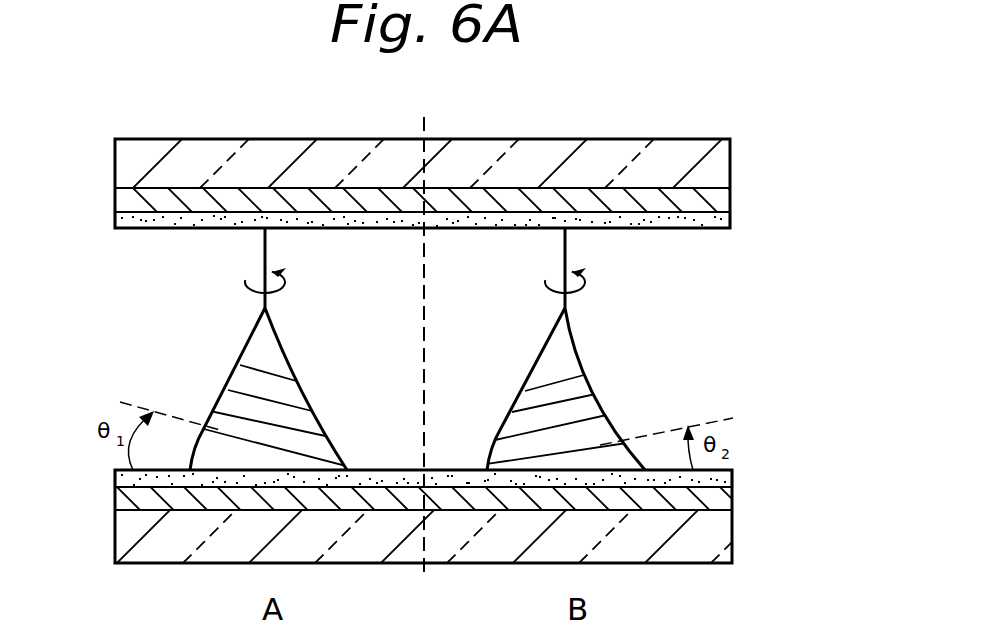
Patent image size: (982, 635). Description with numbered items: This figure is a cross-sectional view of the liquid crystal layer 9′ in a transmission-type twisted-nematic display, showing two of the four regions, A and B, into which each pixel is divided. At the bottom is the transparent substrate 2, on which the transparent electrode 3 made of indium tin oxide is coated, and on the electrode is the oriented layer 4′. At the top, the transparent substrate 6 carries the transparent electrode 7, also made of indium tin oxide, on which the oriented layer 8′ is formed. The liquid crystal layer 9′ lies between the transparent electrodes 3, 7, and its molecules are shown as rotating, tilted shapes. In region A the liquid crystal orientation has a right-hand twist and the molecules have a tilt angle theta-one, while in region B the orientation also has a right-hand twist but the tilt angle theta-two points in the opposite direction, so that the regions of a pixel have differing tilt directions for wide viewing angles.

The transparent substrate 2 is at (723, 540).
The transparent electrode 3 is at (723, 498).
The oriented layer 4′ is at (803, 443).
The transparent substrate 6 is at (730, 150).
The transparent electrode 7 is at (730, 197).
The oriented layer 8′ is at (801, 205).
The liquid crystal layer 9′ is at (723, 343).